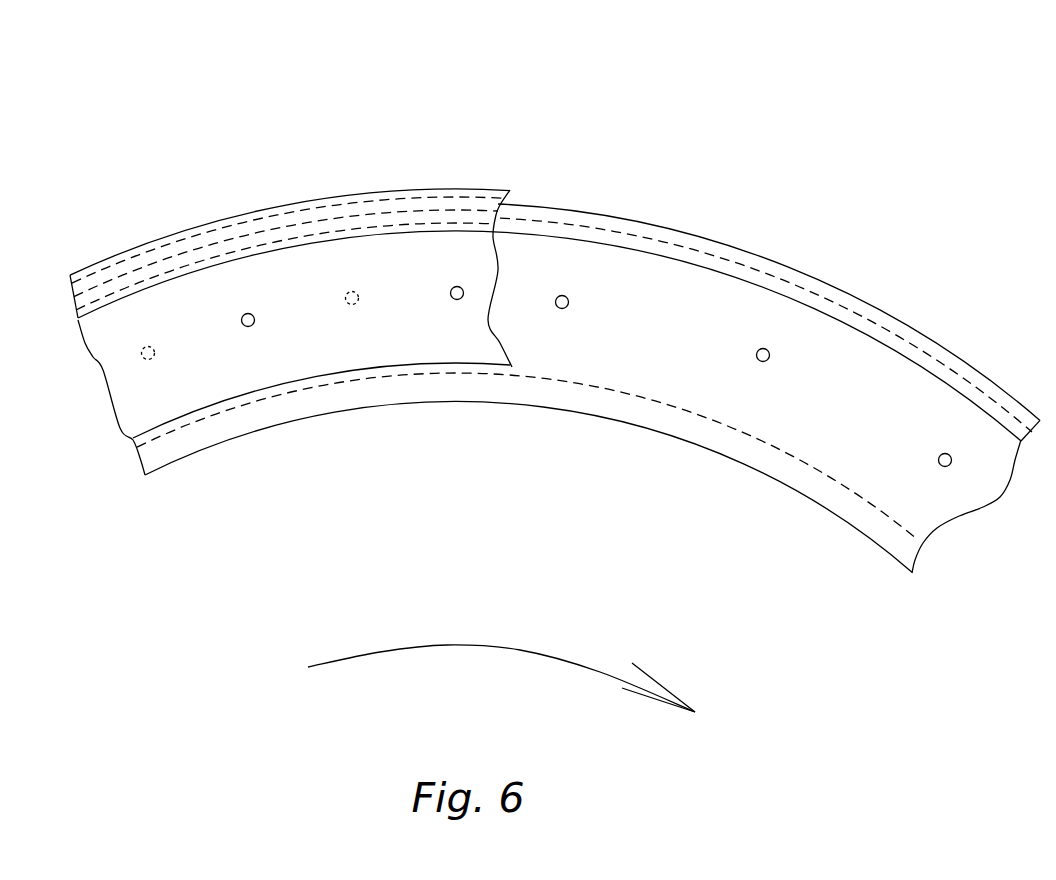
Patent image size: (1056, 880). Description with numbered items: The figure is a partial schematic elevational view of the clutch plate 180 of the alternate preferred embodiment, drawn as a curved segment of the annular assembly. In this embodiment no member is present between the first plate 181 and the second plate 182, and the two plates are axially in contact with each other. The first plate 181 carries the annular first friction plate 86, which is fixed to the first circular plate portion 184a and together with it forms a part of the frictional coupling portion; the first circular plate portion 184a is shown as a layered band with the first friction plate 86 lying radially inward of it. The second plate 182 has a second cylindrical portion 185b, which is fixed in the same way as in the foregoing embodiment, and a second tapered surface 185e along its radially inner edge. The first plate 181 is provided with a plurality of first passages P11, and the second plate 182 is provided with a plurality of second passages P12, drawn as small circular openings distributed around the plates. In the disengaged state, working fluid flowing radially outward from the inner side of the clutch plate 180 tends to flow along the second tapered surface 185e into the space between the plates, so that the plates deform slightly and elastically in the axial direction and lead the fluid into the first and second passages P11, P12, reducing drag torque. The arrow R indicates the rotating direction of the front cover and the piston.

The clutch plate 180 is at (555, 307).
The first plate 181 is at (338, 196).
The second plate 182 is at (603, 207).
The first circular plate portion 184a is at (298, 213).
The second cylindrical portion 185b is at (890, 330).
The second tapered surface 185e is at (727, 456).
The first friction plate 86 is at (152, 305).
The first passages P11 is at (242, 307).
The second passages P12 is at (560, 287).
The rotating direction R is at (475, 645).